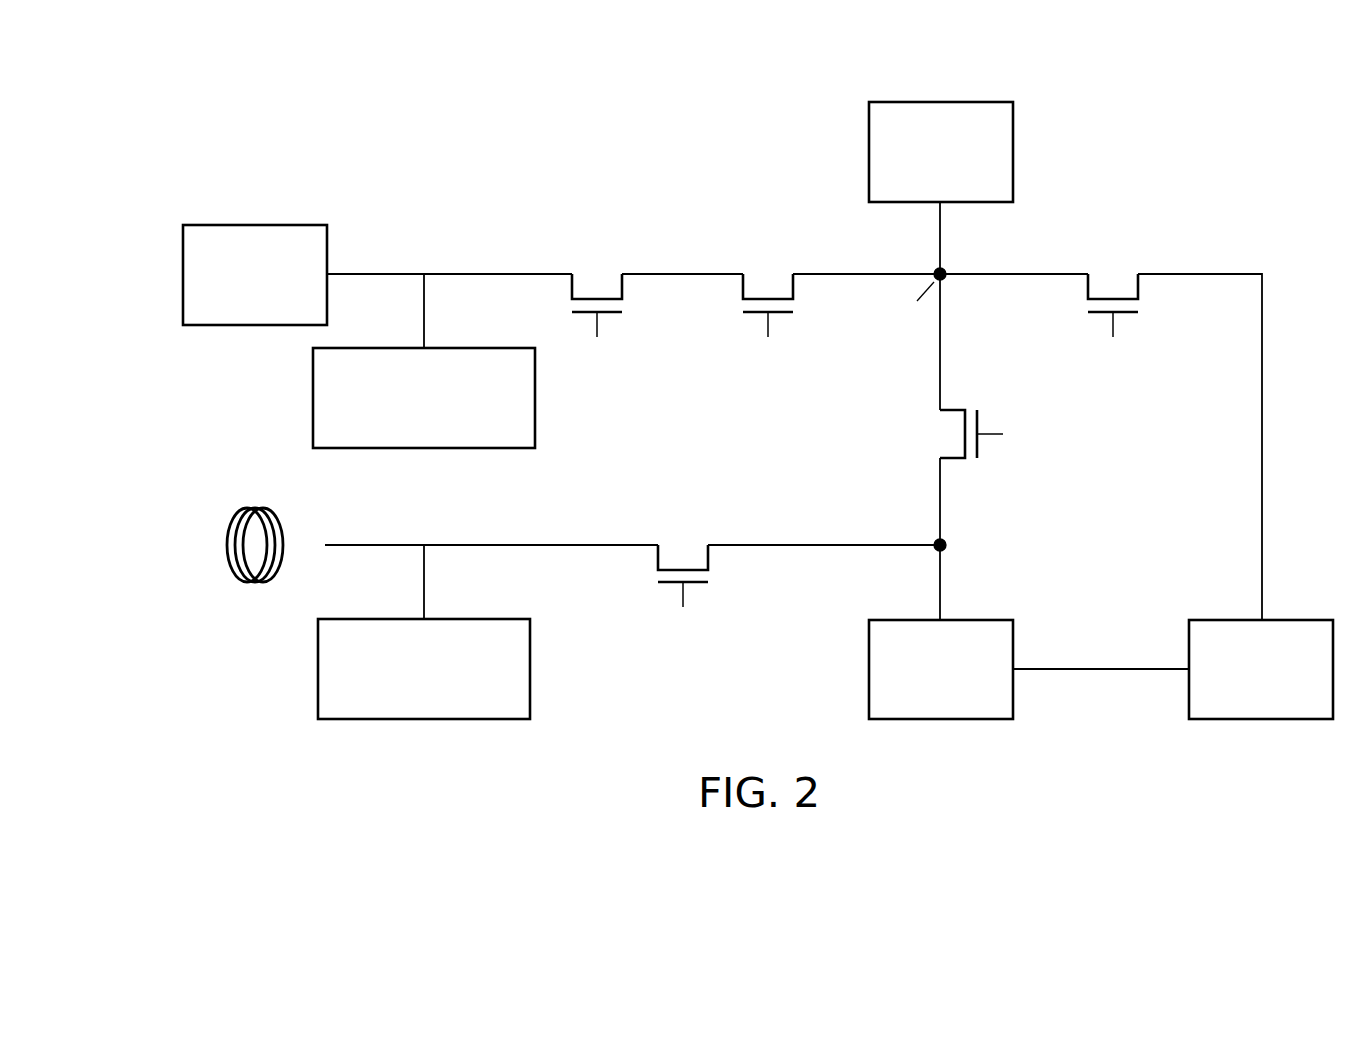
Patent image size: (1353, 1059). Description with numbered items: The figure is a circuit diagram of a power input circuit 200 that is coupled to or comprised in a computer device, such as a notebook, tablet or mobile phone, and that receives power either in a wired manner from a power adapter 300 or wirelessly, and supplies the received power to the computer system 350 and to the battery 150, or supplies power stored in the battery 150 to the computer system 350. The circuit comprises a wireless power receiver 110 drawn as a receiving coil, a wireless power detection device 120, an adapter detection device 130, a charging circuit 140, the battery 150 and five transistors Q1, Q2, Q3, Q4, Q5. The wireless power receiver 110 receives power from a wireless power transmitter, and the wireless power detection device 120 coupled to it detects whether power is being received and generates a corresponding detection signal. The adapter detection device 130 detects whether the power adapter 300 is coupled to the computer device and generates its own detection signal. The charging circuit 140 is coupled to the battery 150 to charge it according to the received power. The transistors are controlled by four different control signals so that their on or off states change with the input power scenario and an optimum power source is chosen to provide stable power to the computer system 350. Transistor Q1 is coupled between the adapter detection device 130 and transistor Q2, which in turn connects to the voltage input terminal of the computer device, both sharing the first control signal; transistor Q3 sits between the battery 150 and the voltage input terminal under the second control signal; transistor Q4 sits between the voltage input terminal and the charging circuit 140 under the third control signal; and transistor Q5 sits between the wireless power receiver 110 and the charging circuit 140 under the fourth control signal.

The power input circuit 200 is at (278, 59).
The power adapter 300 is at (253, 223).
The computer system 350 is at (940, 100).
The adapter detection device 130 is at (424, 450).
The wireless power receiver 110 is at (256, 585).
The wireless power detection device 120 is at (424, 721).
The charging circuit 140 is at (940, 721).
The battery 150 is at (1262, 721).
The transistor Q1 is at (595, 272).
The transistor Q2 is at (766, 272).
The transistor Q3 is at (1111, 273).
The transistor Q4 is at (940, 433).
The transistor Q5 is at (681, 542).